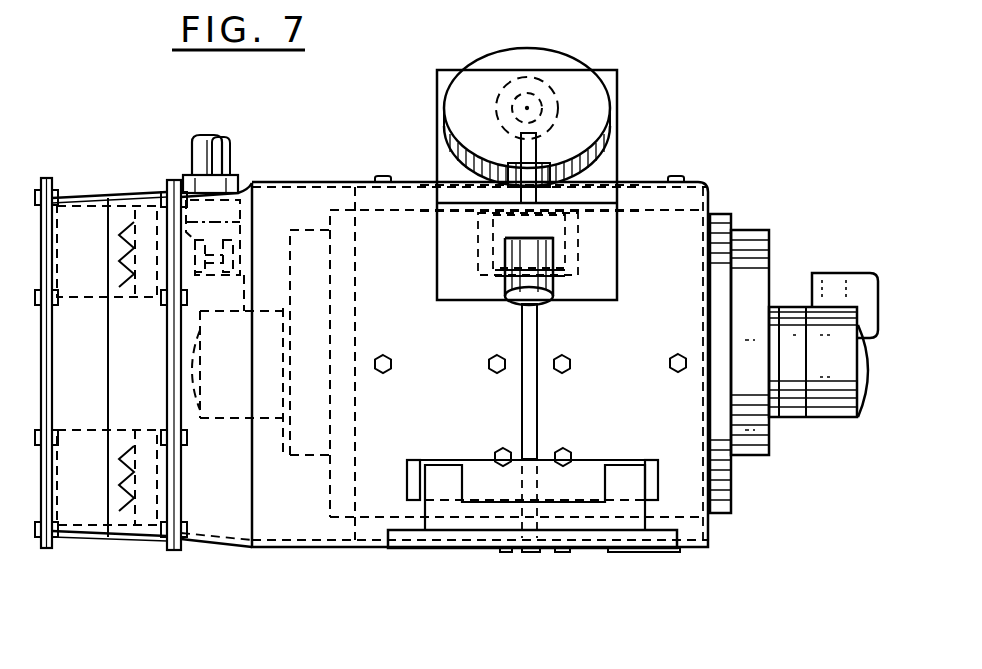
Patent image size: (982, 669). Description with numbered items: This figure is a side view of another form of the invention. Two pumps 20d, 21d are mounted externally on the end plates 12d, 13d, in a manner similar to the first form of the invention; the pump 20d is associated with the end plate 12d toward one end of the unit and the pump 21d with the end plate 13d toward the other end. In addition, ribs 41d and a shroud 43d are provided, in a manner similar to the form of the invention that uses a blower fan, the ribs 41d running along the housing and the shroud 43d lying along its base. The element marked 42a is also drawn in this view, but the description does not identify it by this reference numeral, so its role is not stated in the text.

The filter section 42a is at (93, 216).
The ribs 41d is at (686, 190).
The end plate 13d is at (763, 237).
The pump 21d is at (829, 402).
The pump 20d is at (231, 403).
The end plate 12d is at (313, 443).
The shroud 43d is at (363, 548).